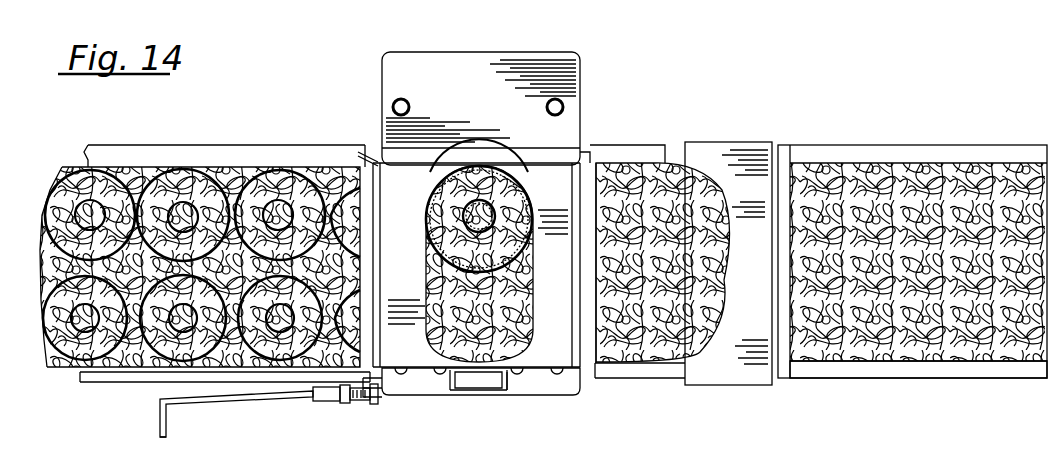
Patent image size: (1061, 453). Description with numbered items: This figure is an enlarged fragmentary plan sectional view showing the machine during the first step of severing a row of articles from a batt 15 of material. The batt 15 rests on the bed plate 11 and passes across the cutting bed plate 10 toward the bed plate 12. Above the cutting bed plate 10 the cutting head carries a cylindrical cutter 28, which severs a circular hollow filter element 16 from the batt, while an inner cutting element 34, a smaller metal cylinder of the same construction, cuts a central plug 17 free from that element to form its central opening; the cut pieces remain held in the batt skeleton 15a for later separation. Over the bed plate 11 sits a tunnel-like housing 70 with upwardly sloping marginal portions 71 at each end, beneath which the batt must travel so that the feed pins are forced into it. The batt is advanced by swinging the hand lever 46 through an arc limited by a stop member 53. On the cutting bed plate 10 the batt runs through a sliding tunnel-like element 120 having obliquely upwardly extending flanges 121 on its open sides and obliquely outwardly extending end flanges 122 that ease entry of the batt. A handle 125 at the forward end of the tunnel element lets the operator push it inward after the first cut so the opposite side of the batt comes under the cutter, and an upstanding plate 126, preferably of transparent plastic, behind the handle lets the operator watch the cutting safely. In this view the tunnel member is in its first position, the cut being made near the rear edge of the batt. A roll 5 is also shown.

The roll 5 is at (532, 203).
The cutting bed plate 10 is at (576, 122).
The bed plate 11 is at (912, 370).
The bed plate 12 is at (194, 149).
The batt 15 is at (525, 332).
The batt skeleton 15a is at (132, 368).
The filter element 16 is at (280, 190).
The central plug 17 is at (266, 208).
The cylindrical cutter 28 is at (497, 166).
The inner cutting element 34 is at (494, 226).
The hand lever 46 is at (233, 400).
The stop member 53 is at (376, 398).
The tunnel-like housing 70 is at (738, 162).
The upwardly sloping marginal portion 71 is at (792, 162).
The tunnel-like element 120 is at (428, 358).
The obliquely upwardly extending flange 121 is at (600, 165).
The end flange 122 is at (360, 156).
The handle 125 is at (506, 392).
The upstanding plate 126 is at (482, 392).